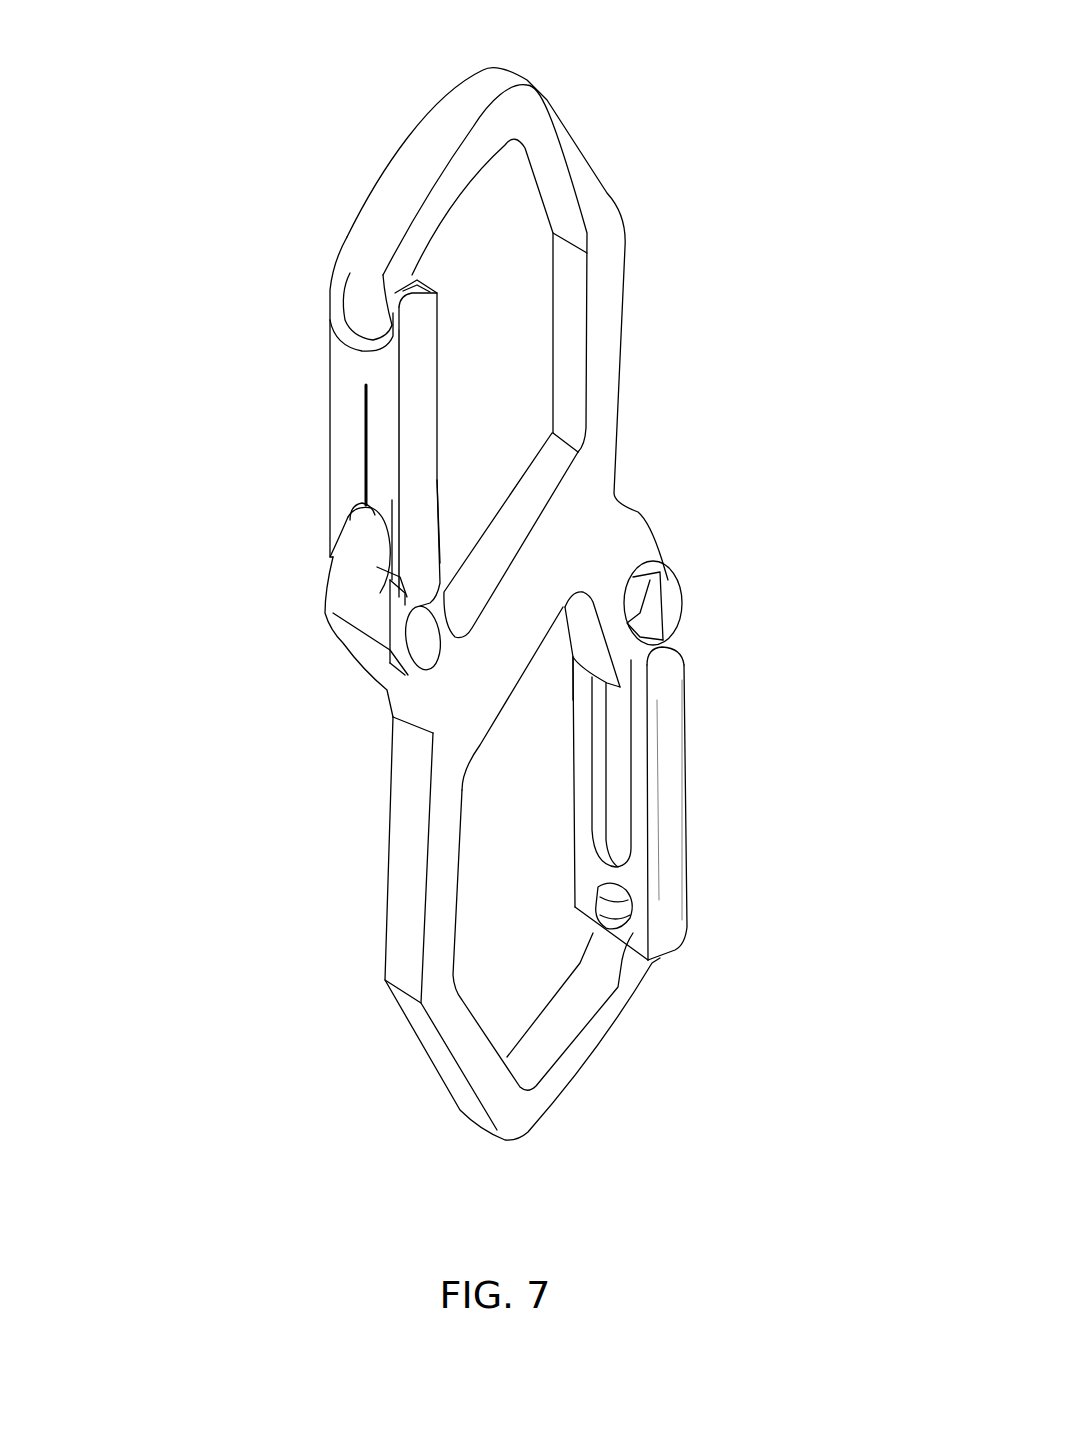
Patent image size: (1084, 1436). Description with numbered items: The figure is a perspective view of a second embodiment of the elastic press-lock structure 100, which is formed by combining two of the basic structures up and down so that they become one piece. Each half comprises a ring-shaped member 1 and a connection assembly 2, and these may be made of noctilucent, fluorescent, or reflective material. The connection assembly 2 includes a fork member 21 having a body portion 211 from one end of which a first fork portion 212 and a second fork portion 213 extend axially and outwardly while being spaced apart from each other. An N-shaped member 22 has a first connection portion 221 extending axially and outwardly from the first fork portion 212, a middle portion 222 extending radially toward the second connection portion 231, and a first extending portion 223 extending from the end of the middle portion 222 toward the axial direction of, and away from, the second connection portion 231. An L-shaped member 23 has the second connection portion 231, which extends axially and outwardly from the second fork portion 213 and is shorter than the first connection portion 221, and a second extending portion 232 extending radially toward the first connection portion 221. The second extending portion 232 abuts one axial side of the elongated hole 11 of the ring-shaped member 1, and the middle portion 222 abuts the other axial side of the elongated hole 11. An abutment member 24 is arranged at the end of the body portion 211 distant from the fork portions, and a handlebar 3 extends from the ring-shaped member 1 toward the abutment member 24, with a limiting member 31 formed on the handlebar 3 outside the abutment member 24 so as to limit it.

The elastic press-lock structure 100 is at (600, 100).
The ring-shaped member 1 is at (647, 518).
The elongated hole 11 is at (381, 592).
The connection assembly 2 is at (190, 408).
The fork member 21 is at (439, 330).
The body portion 211 is at (363, 366).
The first fork portion 212 is at (348, 432).
The second fork portion 213 is at (380, 392).
The N-shaped member 22 is at (330, 540).
The first connection portion 221 is at (337, 515).
The middle portion 222 is at (395, 618).
The first extending portion 223 is at (392, 647).
The L-shaped member 23 is at (434, 550).
The second connection portion 231 is at (393, 557).
The second extending portion 232 is at (385, 578).
The abutment member 24 is at (370, 327).
The handlebar 3 is at (627, 330).
The limiting member 31 is at (407, 285).